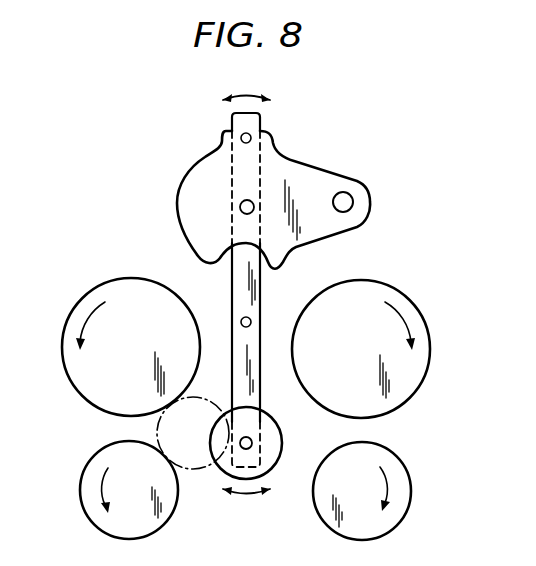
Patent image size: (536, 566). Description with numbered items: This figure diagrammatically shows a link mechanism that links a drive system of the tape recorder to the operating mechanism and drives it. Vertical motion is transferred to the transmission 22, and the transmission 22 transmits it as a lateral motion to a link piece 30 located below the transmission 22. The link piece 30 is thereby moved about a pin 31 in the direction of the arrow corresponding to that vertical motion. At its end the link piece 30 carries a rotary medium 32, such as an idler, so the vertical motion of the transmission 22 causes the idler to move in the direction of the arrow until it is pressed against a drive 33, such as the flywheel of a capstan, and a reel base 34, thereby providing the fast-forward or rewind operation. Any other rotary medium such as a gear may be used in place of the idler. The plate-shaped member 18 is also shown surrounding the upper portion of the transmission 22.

The support plate 18 is at (307, 173).
The transmission 22 is at (230, 132).
The link piece 30 is at (242, 285).
The pin 31 is at (257, 315).
The rotary medium 32 is at (275, 435).
The drive 33 is at (115, 288).
The reel base 34 is at (102, 520).